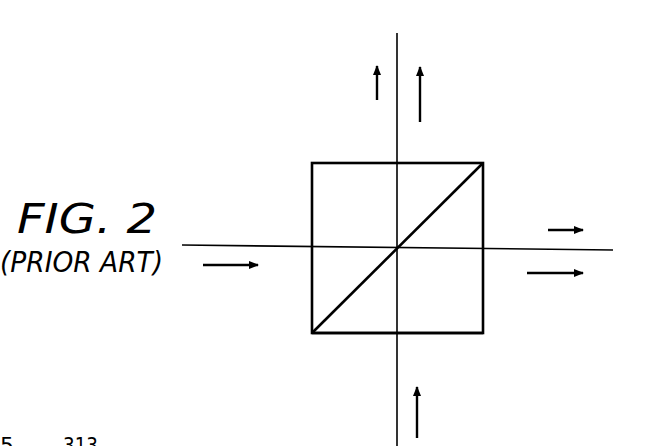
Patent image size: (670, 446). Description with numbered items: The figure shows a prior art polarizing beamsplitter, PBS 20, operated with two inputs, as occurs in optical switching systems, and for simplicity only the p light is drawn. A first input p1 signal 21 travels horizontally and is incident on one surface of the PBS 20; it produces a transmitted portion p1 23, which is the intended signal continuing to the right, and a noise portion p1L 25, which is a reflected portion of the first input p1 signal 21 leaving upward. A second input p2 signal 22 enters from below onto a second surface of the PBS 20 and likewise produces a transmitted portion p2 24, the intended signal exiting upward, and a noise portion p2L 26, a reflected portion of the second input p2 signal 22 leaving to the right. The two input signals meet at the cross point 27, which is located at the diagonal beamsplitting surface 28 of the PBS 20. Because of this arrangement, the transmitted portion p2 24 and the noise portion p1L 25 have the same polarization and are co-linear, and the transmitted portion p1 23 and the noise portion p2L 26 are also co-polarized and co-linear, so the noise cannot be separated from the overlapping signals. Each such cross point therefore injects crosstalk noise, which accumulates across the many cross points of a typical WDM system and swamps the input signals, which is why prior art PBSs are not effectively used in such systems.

The PBS 20 is at (250, 156).
The first input p1 signal 21 is at (230, 300).
The second input p2 signal 22 is at (457, 418).
The transmitted portion p1 23 is at (553, 310).
The transmitted portion p2 24 is at (448, 78).
The noise portion p1L 25 is at (333, 62).
The noise portion p2L 26 is at (561, 198).
The cross point 27 is at (353, 336).
The beamsplitting surface 28 is at (452, 162).